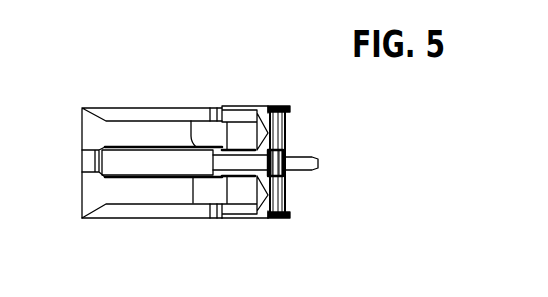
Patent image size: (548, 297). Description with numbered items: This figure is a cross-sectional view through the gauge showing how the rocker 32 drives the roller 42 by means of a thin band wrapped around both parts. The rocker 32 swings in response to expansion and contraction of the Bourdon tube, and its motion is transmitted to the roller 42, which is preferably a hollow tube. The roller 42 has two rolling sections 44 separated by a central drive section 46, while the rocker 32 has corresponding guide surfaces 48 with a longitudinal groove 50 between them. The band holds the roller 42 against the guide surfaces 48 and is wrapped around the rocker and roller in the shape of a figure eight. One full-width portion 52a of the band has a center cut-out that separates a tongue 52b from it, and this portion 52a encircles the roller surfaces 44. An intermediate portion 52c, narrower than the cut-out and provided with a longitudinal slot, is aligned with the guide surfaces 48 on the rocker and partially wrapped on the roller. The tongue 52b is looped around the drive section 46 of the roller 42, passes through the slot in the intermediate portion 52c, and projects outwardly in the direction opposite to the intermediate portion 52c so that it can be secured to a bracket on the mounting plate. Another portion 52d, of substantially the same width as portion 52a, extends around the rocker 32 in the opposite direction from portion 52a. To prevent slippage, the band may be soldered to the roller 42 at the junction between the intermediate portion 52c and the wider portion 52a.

The rocker 32 is at (109, 223).
The roller 42 is at (240, 219).
The rolling sections 44 is at (247, 130).
The drive section 46 is at (287, 154).
The guide surfaces 48 is at (137, 112).
The longitudinal groove 50 is at (122, 176).
The band portion 52a is at (262, 107).
The tongue 52b is at (321, 163).
The intermediate portion 52c is at (197, 178).
The band portion 52d is at (82, 148).